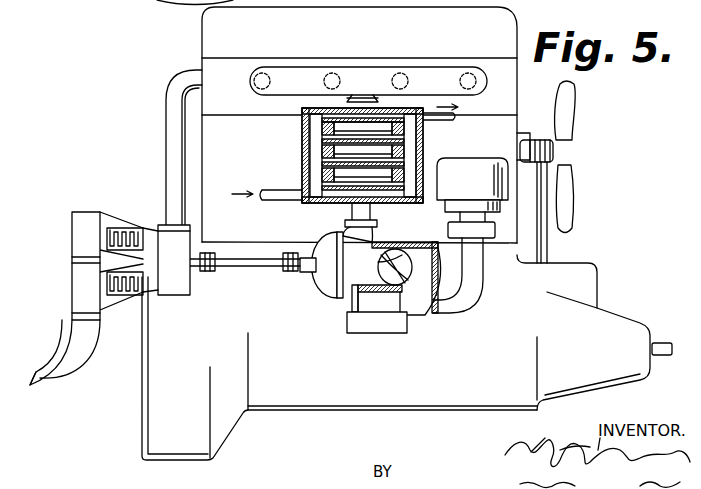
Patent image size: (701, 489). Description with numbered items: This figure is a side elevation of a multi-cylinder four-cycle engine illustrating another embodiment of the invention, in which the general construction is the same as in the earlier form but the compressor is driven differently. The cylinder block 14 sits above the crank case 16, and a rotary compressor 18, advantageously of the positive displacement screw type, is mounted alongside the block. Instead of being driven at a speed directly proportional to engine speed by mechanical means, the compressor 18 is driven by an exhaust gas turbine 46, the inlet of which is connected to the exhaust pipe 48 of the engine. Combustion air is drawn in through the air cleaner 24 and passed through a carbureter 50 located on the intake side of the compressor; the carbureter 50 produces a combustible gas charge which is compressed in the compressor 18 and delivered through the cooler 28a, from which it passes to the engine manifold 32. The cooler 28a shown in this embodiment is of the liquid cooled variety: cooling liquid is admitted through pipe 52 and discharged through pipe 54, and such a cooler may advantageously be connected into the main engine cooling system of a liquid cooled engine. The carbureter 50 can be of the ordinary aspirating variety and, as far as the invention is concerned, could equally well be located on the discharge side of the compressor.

The cylinder block 14 is at (213, 155).
The crank case 16 is at (337, 403).
The rotary compressor 18 is at (387, 262).
The air cleaner 24 is at (476, 165).
The cooler 28a is at (302, 162).
The manifold pipe 32 is at (373, 80).
The exhaust gas turbine 46 is at (120, 228).
The exhaust pipe 48 is at (173, 125).
The carbureter 50 is at (487, 238).
The pipe 52 is at (281, 200).
The pipe 54 is at (433, 122).